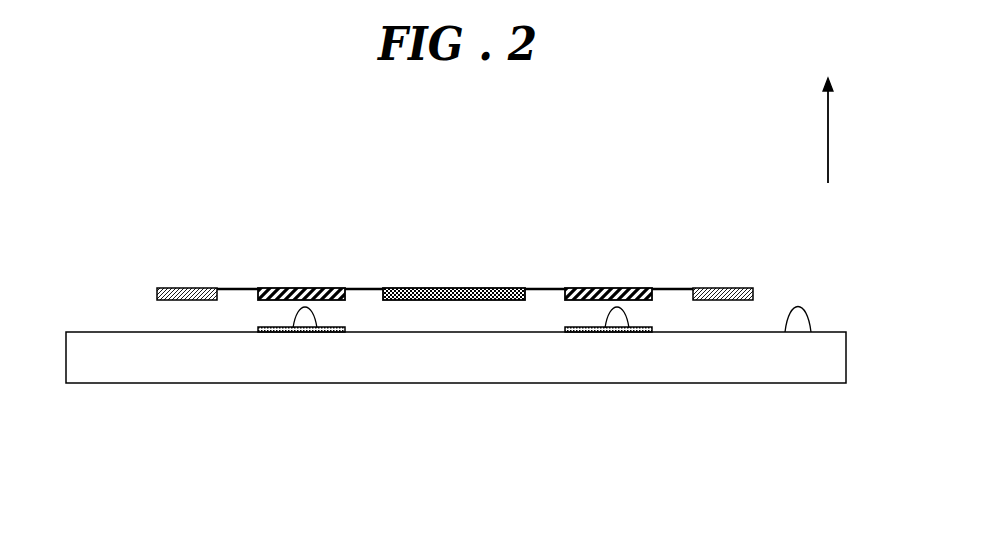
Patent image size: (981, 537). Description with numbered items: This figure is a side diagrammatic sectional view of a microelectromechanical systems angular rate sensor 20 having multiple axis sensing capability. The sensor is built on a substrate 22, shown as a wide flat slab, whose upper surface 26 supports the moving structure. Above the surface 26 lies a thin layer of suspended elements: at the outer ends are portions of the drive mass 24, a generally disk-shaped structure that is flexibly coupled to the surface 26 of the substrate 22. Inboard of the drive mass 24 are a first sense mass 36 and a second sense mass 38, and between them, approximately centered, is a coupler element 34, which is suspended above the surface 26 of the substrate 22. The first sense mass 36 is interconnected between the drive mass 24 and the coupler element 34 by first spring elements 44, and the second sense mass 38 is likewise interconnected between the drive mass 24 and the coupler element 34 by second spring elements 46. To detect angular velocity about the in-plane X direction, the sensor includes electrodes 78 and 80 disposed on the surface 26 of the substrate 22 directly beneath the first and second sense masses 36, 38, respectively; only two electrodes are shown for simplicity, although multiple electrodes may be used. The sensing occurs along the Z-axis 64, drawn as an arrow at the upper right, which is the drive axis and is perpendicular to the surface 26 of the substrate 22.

The angular rate sensor 20 is at (457, 488).
The substrate 22 is at (137, 371).
The drive mass 24 is at (176, 287).
The surface 26 is at (811, 332).
The coupler element 34 is at (452, 287).
The first sense mass 36 is at (307, 287).
The second sense mass 38 is at (592, 287).
The first spring elements 44 is at (237, 287).
The second spring elements 46 is at (533, 287).
The Z-axis 64 is at (828, 143).
The electrode 78 is at (317, 328).
The electrode 80 is at (629, 328).